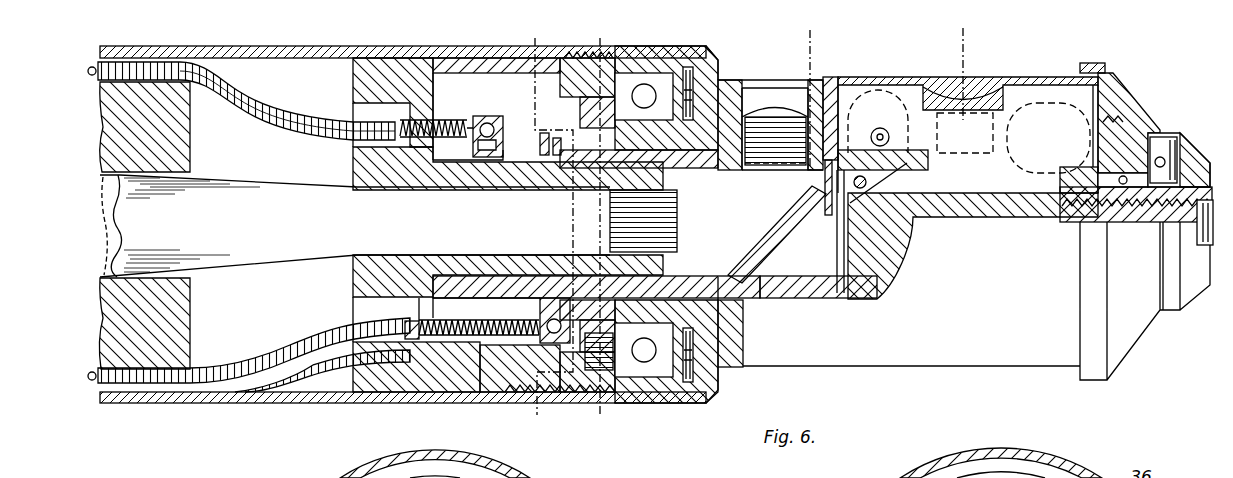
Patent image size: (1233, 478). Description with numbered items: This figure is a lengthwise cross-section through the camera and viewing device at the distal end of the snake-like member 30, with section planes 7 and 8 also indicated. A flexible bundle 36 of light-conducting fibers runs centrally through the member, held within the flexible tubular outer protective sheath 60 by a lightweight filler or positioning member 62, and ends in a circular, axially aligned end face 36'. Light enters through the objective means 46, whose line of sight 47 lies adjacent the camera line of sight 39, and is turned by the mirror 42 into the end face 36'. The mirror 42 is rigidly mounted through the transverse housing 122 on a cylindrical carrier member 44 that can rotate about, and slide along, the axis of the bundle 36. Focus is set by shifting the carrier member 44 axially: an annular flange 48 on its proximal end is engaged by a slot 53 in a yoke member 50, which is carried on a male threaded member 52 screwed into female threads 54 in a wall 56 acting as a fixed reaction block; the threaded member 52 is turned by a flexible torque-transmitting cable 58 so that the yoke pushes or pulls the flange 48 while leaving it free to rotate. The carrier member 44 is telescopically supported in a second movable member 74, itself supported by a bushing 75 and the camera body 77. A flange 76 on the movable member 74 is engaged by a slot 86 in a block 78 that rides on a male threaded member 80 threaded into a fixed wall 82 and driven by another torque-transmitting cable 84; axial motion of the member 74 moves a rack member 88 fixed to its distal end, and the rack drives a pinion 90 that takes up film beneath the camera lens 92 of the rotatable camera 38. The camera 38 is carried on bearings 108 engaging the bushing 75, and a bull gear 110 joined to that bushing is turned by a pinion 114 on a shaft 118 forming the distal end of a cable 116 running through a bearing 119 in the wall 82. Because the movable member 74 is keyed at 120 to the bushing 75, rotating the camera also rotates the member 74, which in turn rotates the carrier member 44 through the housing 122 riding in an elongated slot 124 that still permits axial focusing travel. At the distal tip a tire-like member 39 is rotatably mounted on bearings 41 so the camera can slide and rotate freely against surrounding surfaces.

The snake-like member 30 is at (204, 417).
The flexible bundle of light-conducting fibers 36 is at (355, 237).
The end face of the bundle 36' is at (664, 215).
The rotatable camera 38 is at (1005, 379).
The camera line of sight / tire-like member 39 is at (970, 37).
The bearings 41 is at (1160, 145).
The mirror 42 is at (779, 218).
The carrier member 44 is at (685, 277).
The objective means 46 is at (822, 85).
The line of sight of the objective means 47 is at (795, 37).
The annular flange 48 is at (478, 155).
The yoke member 50 is at (492, 122).
The male threaded member 52 is at (472, 122).
The slot 53 is at (500, 143).
The female threads 54 is at (420, 125).
The wall 56 is at (352, 98).
The flexible torque-transmitting cable 58 is at (268, 90).
The flexible tubular outer protective sheath 60 is at (145, 408).
The filler or positioning member 62 is at (175, 168).
The movable member 74 is at (762, 290).
The bushing 75 is at (603, 165).
The flange 76 is at (542, 148).
The camera body 77 is at (846, 300).
The block 78 is at (540, 310).
The male threaded member 80 is at (471, 320).
The fixed wall 82 is at (446, 320).
The flexible torque-transmitting cable 84 is at (283, 385).
The slot 86 is at (552, 318).
The rack member 88 is at (898, 214).
The pinion 90 is at (874, 133).
The camera lens 92 is at (1000, 80).
The bearings 108 is at (650, 92).
The bull gear 110 is at (577, 392).
The pinion 114 is at (622, 405).
The flexible torque-transmitting cable 116 is at (328, 380).
The shaft 118 is at (402, 395).
The bearing 119 is at (480, 396).
The key 120 is at (775, 100).
The housing 122 is at (855, 77).
The elongated slot 124 is at (823, 231).
The section line 7- 7 is at (537, 35).
The section line 8- 8 is at (574, 39).